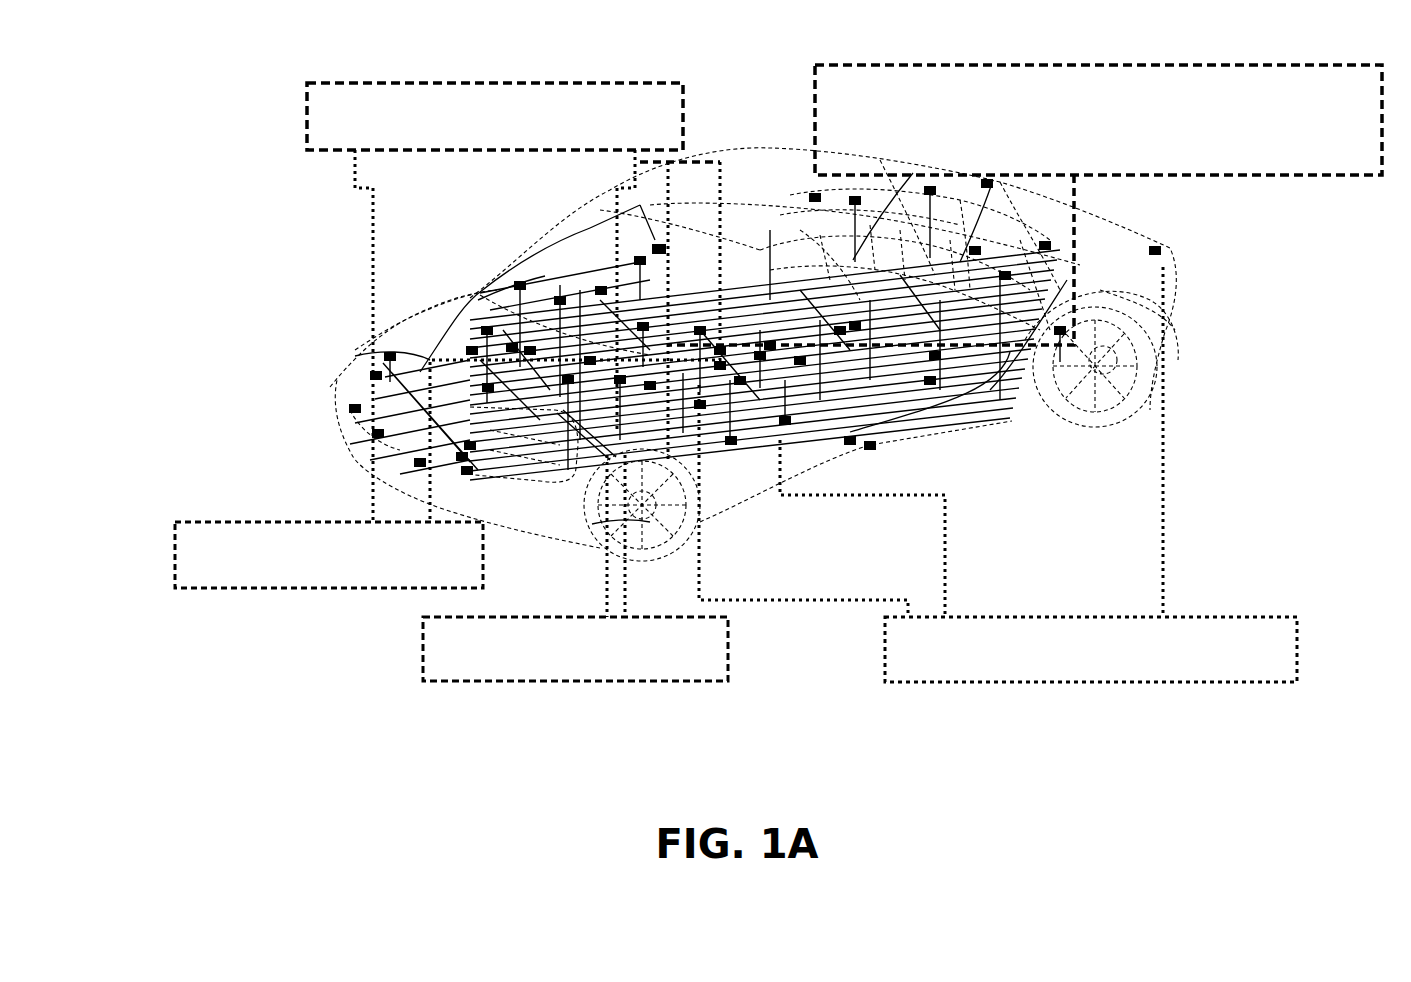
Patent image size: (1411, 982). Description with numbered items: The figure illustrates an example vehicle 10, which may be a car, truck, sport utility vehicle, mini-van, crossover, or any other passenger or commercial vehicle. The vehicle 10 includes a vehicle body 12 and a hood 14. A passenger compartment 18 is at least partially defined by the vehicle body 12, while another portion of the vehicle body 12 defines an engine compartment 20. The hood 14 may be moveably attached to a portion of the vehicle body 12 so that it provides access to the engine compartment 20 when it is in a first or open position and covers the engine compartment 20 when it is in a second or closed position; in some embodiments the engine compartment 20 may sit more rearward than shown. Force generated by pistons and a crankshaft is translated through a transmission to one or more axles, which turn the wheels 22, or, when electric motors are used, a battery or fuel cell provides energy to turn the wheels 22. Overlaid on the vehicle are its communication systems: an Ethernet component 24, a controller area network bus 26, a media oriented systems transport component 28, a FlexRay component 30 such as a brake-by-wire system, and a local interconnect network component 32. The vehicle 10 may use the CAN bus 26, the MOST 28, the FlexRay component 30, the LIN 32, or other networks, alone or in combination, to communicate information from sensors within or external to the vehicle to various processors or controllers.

The vehicle 10 is at (111, 156).
The vehicle body 12 is at (729, 274).
The hood 14 is at (462, 295).
The passenger compartment 18 is at (637, 241).
The engine compartment 20 is at (338, 346).
The wheels 22 is at (578, 518).
The Ethernet component 24 is at (153, 531).
The controller area network (CAN) bus 26 is at (288, 85).
The media oriented systems transport component (MOST) 28 is at (820, 46).
The FlexRay component 30 is at (396, 646).
The local interconnect network component (LIN) 32 is at (861, 656).